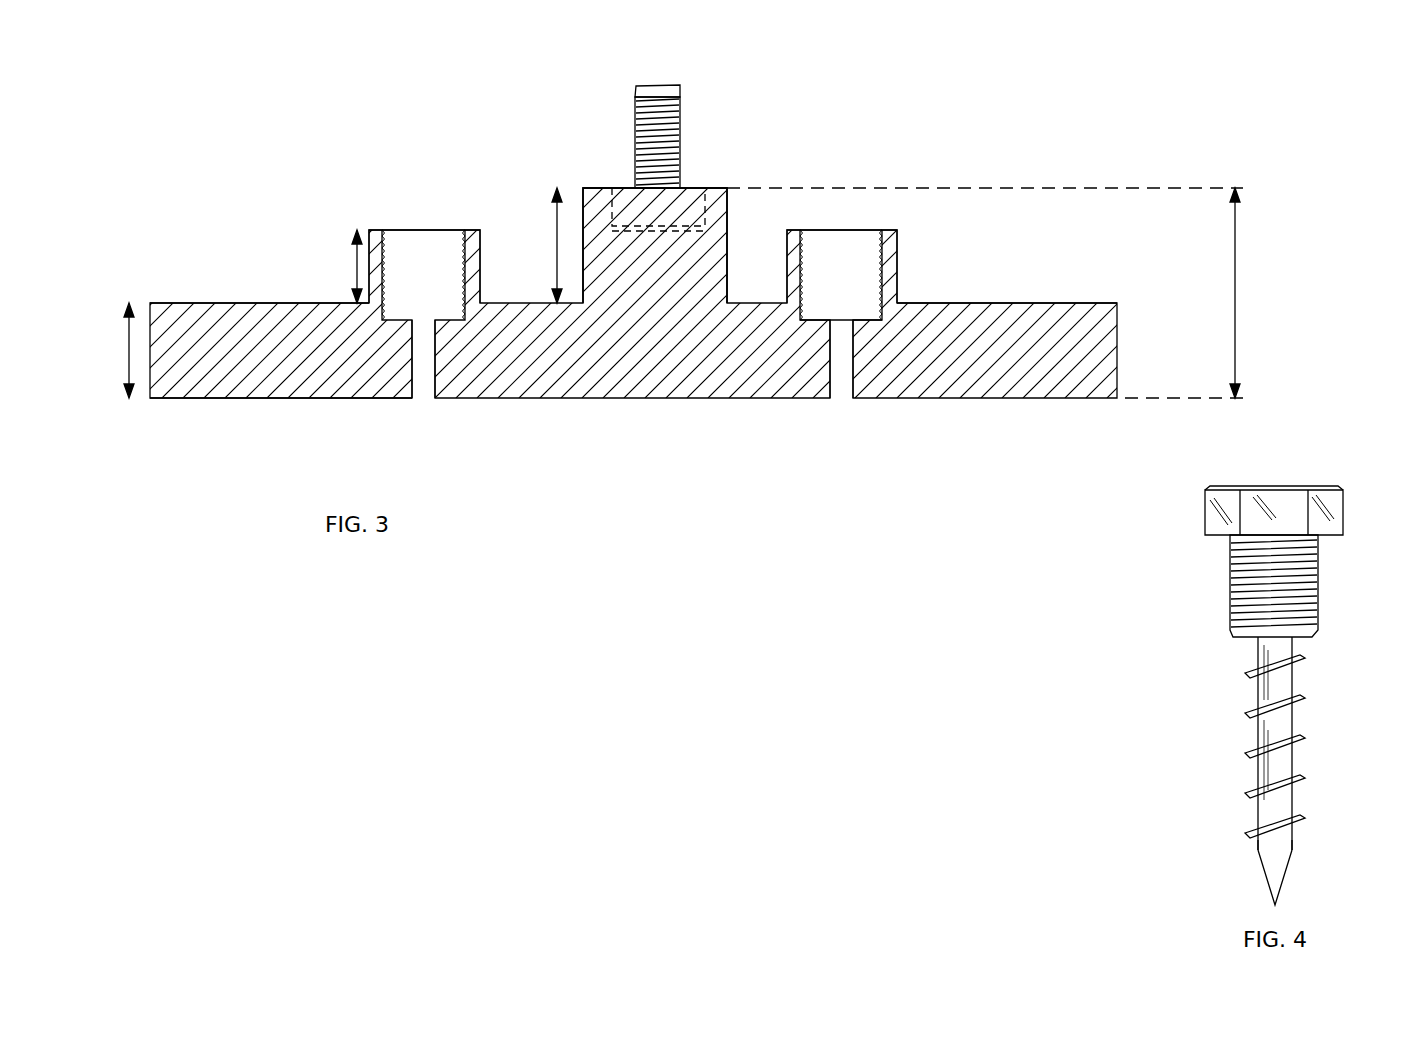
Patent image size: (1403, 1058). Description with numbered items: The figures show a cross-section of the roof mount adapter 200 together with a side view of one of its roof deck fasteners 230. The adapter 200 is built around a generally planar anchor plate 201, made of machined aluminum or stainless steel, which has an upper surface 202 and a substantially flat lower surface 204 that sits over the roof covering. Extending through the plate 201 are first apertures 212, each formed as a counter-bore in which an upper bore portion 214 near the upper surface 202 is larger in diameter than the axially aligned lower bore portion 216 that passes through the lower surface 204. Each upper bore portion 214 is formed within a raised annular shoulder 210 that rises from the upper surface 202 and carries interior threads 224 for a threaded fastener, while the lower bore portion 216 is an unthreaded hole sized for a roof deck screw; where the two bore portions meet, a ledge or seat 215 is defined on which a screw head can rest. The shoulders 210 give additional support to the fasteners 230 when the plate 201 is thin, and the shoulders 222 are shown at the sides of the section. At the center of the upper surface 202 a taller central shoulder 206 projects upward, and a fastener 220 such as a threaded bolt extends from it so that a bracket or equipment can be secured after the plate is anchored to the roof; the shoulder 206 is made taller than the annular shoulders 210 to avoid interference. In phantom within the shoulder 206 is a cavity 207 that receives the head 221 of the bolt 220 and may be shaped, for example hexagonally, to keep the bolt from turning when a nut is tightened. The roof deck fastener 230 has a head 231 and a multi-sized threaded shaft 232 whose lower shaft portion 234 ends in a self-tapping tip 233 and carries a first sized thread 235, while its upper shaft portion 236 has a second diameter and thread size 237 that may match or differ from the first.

In FIG. 3, the roof mount adapter 200 is at (1100, 145).
In FIG. 3, the anchor plate 201 is at (1117, 340).
In FIG. 3, the upper surface 202 is at (162, 302).
In FIG. 3, the lower surface 204 is at (235, 400).
In FIG. 3, the central shoulder 206 is at (735, 190).
In FIG. 3, the cavity 207 is at (660, 228).
In FIG. 3, the raised annular shoulder 210 is at (897, 270).
In FIG. 3, the first aperture 212 is at (437, 205).
In FIG. 3, the upper bore portion 214 is at (818, 258).
In FIG. 3, the seat 215 is at (448, 323).
In FIG. 3, the lower bore portion 216 is at (850, 373).
In FIG. 3, the fastener 220 is at (638, 84).
In FIG. 3, the head 221 is at (615, 188).
In FIG. 3, the side boss 222 is at (482, 245).
In FIG. 3, the interior threads 224 is at (385, 258).
In FIG. 4, the fastener 230 is at (1204, 848).
In FIG. 4, the head 231 is at (1215, 488).
In FIG. 4, the threaded shaft 232 is at (1293, 752).
In FIG. 4, the self-tapping tip 233 is at (1278, 898).
In FIG. 4, the lower shaft portion 234 is at (1292, 850).
In FIG. 4, the first sized thread 235 is at (1300, 660).
In FIG. 4, the upper shaft portion 236 is at (1290, 590).
In FIG. 4, the second thread size 237 is at (1318, 565).